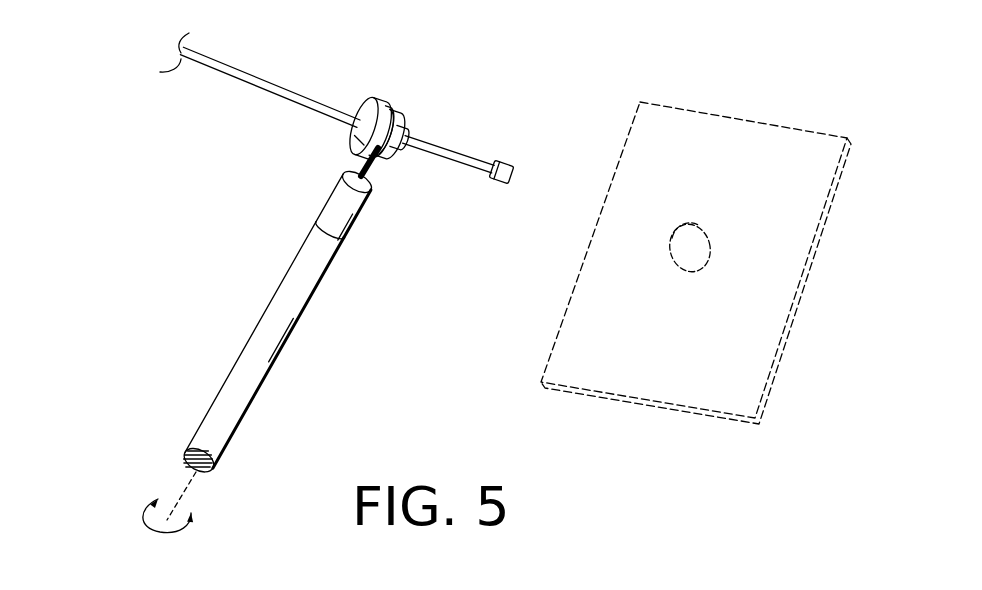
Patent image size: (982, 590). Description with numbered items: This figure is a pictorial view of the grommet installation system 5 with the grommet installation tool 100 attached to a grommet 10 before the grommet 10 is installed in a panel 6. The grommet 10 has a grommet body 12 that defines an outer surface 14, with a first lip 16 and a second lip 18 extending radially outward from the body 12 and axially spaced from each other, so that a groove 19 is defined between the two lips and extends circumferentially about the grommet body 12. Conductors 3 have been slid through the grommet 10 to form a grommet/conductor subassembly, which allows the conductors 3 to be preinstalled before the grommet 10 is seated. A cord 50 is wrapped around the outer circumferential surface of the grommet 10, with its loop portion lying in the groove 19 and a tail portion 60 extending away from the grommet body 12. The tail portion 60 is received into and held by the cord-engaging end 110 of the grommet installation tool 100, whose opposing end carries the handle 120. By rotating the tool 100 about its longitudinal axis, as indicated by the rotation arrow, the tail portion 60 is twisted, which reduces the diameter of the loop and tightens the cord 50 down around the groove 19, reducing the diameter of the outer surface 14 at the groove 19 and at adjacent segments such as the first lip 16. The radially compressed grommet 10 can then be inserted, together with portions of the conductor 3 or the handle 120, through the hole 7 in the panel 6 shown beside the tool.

The conductors 3 is at (194, 62).
The grommet installation system 5 is at (596, 77).
The panel 6 is at (753, 192).
The hole 7 is at (680, 262).
The grommet 10 is at (444, 92).
The grommet body 12 is at (406, 164).
The outer surface 14 is at (362, 134).
The first lip 16 is at (408, 125).
The second lip 18 is at (377, 115).
The groove 19 is at (396, 105).
The cord 50 is at (328, 163).
The tail portion 60 is at (377, 158).
The grommet installation tool 100 is at (292, 390).
The cord-engaging end 110 is at (332, 217).
The handle 120 is at (213, 425).